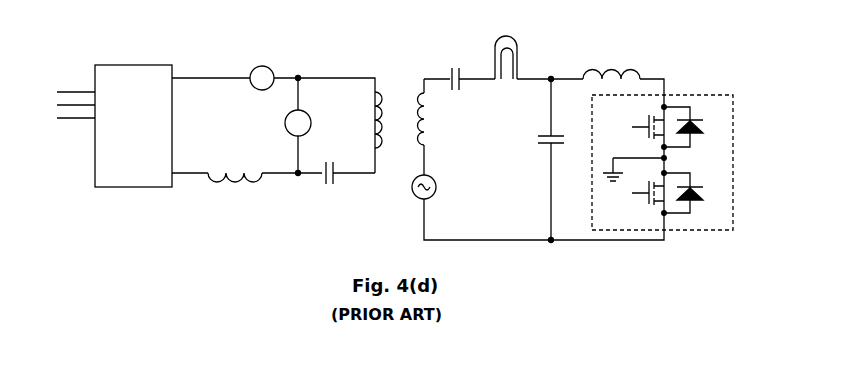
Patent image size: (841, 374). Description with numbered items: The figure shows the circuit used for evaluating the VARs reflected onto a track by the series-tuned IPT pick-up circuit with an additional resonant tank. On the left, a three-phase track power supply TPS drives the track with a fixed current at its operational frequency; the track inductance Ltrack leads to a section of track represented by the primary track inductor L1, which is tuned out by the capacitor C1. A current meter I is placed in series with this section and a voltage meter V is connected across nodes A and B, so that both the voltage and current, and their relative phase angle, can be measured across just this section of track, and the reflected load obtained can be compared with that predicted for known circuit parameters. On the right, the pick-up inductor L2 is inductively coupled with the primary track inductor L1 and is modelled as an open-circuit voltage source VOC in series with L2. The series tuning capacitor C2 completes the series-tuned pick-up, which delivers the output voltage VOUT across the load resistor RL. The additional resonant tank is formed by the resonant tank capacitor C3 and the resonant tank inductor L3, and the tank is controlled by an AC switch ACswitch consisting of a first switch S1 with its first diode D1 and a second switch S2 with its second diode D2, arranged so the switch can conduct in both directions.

The track power supply TPS is at (102, 126).
The current meter I is at (262, 78).
The voltage meter V is at (298, 125).
The node A is at (292, 72).
The node B is at (292, 167).
The primary track inductor L1 is at (364, 120).
The track inductance Ltrack is at (235, 167).
The tuning capacitor C1 is at (332, 162).
The series tuning capacitor C2 is at (465, 83).
The resonant tank capacitor C3 is at (560, 159).
The pick-up inductor L2 is at (431, 119).
The resonant tank inductor L3 is at (611, 67).
The load resistor RL is at (516, 57).
The output voltage VOUT is at (530, 31).
The open-circuit voltage source VOC is at (437, 187).
The AC switch ACswitch is at (672, 162).
The first switch S1 is at (646, 132).
The second switch S2 is at (646, 199).
The first diode D1 is at (695, 127).
The second diode D2 is at (695, 193).